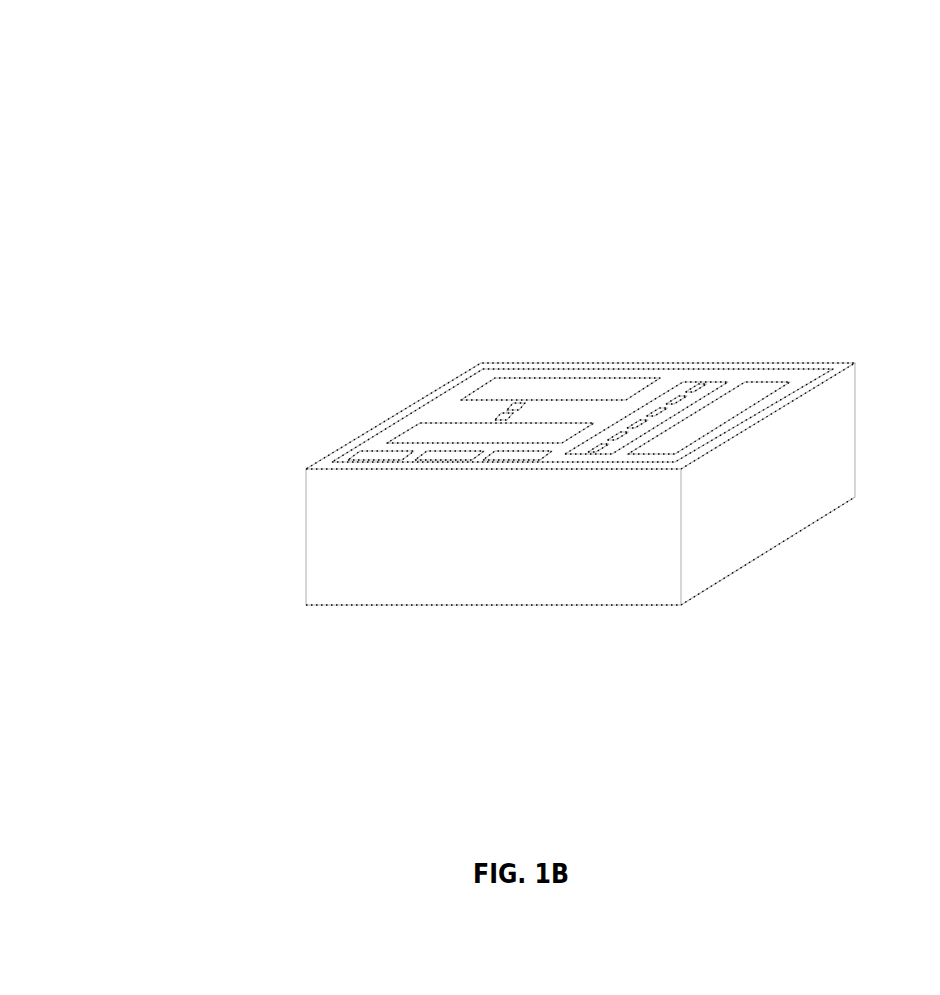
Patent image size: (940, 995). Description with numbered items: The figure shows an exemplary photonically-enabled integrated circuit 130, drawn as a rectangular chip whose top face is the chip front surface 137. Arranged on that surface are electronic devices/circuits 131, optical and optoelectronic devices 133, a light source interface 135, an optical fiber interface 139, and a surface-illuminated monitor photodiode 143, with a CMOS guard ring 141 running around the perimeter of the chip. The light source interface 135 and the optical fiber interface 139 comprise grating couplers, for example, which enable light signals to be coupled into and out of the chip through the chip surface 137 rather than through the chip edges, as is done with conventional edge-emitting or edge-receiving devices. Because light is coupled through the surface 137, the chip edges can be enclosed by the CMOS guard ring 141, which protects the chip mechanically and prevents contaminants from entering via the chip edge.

The photonically-enabled integrated circuit 130 is at (154, 100).
The electronic devices/circuits 131 is at (378, 460).
The optical and optoelectronic devices 133 is at (558, 398).
The light source interface 135 is at (522, 404).
The chip front surface 137 is at (615, 373).
The optical fiber interface 139 is at (705, 382).
The CMOS guard ring 141 is at (838, 368).
The surface-illuminated monitor photodiode 143 is at (500, 416).